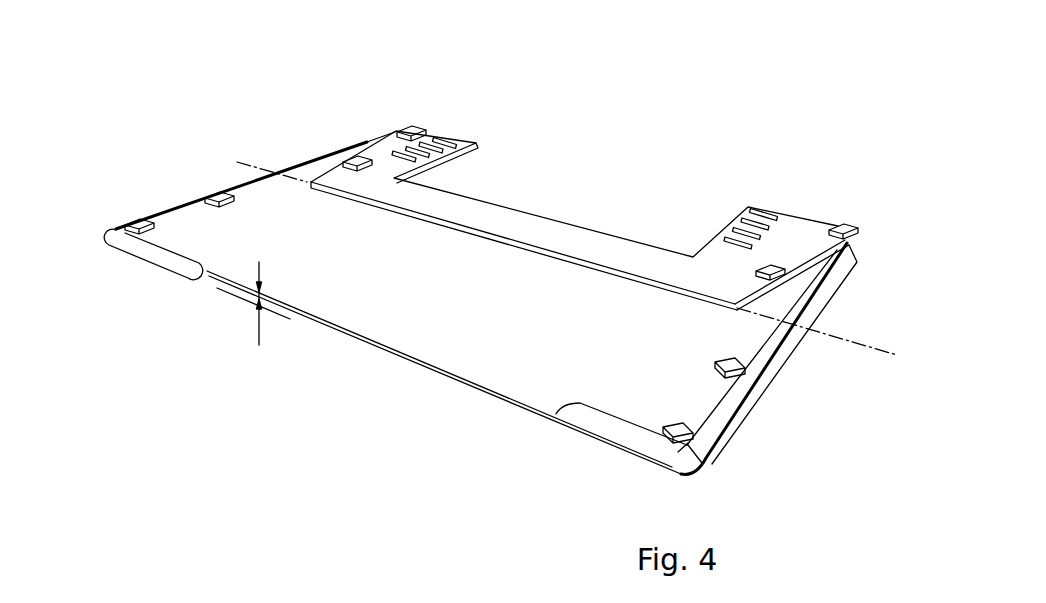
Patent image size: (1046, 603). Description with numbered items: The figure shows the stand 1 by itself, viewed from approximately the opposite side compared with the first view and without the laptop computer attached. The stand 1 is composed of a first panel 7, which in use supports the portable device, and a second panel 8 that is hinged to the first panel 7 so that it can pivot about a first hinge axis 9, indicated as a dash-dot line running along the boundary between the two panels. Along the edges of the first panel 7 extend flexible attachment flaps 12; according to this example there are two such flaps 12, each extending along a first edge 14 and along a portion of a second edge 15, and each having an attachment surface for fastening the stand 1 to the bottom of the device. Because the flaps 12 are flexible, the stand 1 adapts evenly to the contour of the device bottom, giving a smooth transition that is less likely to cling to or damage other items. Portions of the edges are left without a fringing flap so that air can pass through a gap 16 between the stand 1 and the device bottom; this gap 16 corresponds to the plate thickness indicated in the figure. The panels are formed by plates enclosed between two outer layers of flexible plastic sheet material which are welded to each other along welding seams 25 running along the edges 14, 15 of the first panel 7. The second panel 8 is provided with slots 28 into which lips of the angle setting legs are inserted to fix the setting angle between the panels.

The stand 1 is at (593, 146).
The first panel 7 is at (454, 298).
The second panel 8 is at (534, 245).
The first hinge axis 9 is at (883, 347).
The flexible attachment flap 12 is at (115, 229).
The first edge 14 is at (177, 205).
The second edge 15 is at (163, 245).
The gap 16 is at (263, 298).
The welding seam 25 is at (190, 248).
The slot 28 is at (443, 145).